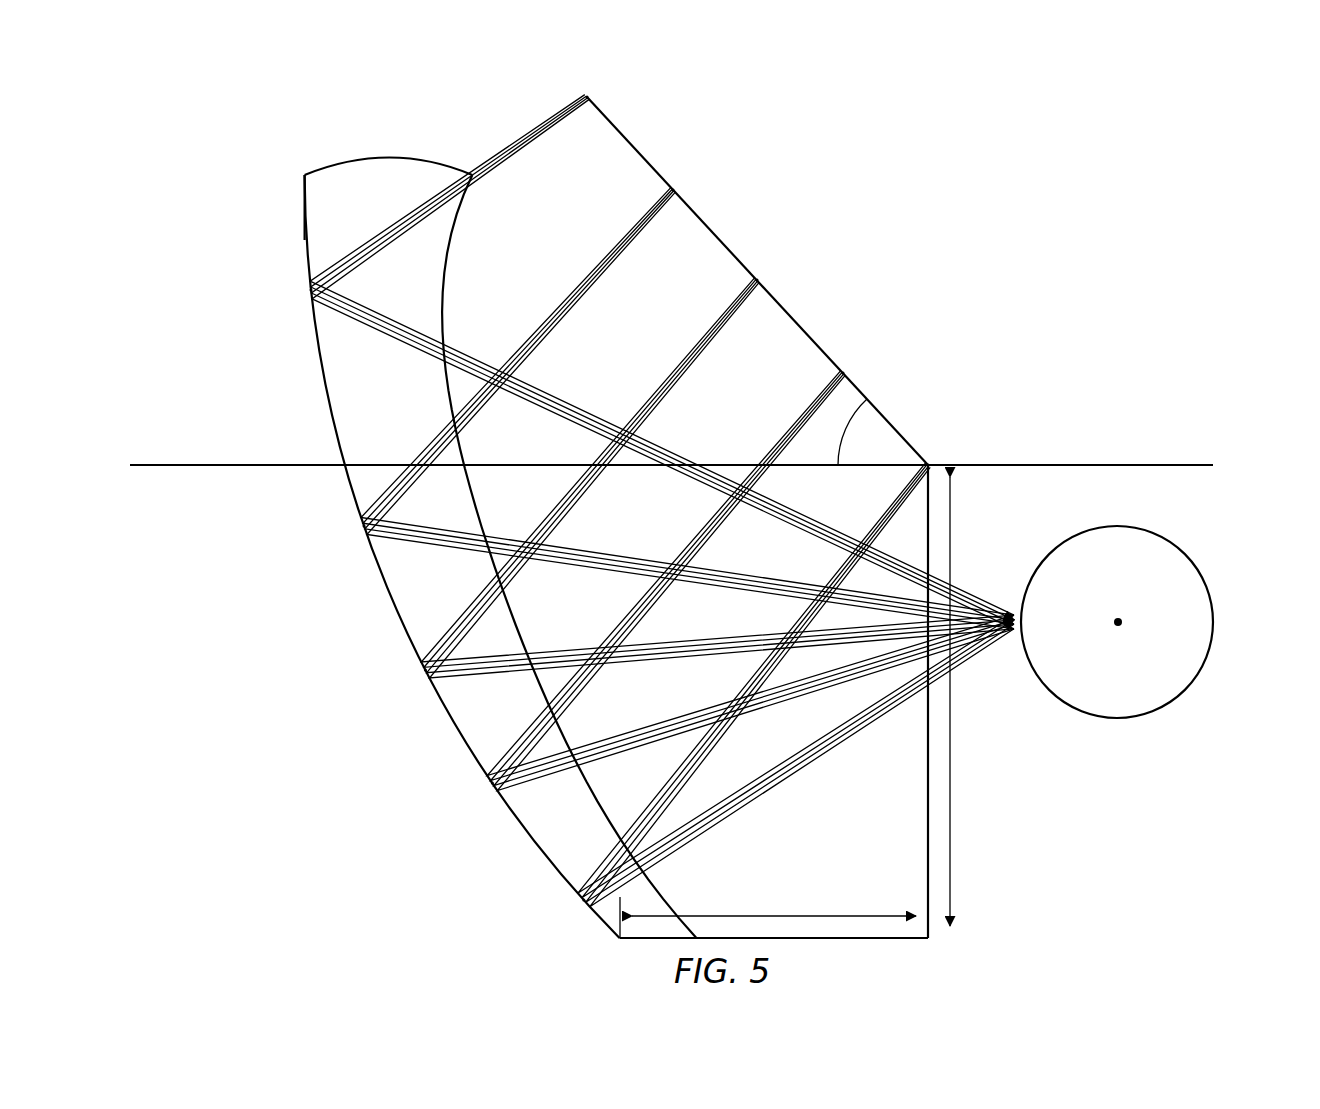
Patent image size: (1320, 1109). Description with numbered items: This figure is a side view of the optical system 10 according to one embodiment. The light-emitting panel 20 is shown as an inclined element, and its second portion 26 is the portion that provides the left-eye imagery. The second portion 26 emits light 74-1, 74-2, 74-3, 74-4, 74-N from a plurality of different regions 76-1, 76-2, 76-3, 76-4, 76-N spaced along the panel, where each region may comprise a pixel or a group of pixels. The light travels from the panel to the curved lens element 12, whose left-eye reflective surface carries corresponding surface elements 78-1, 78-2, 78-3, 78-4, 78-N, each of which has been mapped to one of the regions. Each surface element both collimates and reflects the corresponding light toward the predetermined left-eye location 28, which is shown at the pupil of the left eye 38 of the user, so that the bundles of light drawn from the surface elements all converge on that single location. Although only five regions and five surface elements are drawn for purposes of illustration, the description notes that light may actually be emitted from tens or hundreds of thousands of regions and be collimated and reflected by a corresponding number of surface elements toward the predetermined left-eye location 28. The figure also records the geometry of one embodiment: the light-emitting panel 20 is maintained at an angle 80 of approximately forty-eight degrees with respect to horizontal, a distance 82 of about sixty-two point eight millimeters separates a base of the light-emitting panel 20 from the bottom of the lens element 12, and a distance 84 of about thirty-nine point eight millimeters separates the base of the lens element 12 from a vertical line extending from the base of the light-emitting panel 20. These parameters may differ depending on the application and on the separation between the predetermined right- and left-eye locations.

The optical system 10 is at (330, 108).
The lens element 12 is at (305, 200).
The light-emitting panel 20 is at (619, 131).
The second portion 26 is at (328, 400).
The predetermined left-eye location 28 is at (1118, 622).
The left eye 38 is at (1207, 636).
The light 74-1 is at (518, 152).
The light 74-2 is at (600, 280).
The light 74-3 is at (697, 358).
The light 74-4 is at (720, 522).
The light 74-N is at (757, 684).
The region 76-1 is at (587, 97).
The region 76-2 is at (673, 190).
The region 76-3 is at (757, 280).
The region 76-4 is at (843, 373).
The region 76-N is at (928, 465).
The surface element 78-1 is at (284, 291).
The surface element 78-2 is at (340, 529).
The surface element 78-3 is at (404, 673).
The surface element 78-4 is at (474, 791).
The surface element 78-N is at (566, 907).
The angle 80 is at (893, 443).
The distance 82 is at (950, 815).
The distance 84 is at (810, 914).